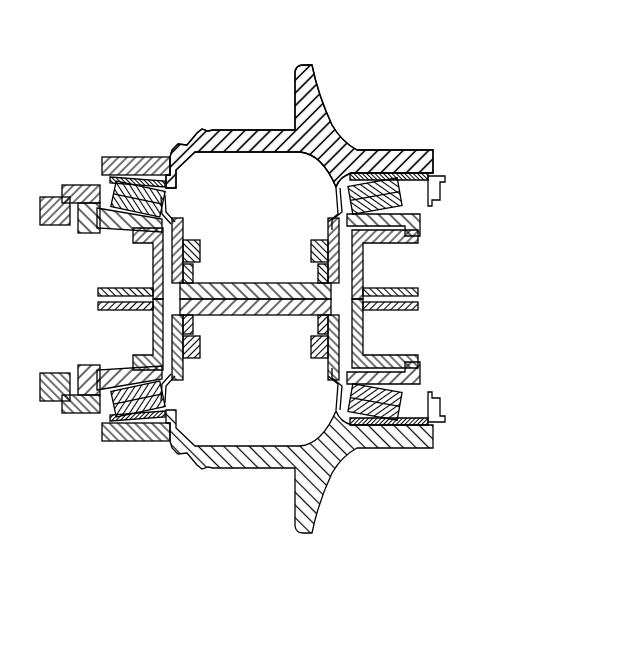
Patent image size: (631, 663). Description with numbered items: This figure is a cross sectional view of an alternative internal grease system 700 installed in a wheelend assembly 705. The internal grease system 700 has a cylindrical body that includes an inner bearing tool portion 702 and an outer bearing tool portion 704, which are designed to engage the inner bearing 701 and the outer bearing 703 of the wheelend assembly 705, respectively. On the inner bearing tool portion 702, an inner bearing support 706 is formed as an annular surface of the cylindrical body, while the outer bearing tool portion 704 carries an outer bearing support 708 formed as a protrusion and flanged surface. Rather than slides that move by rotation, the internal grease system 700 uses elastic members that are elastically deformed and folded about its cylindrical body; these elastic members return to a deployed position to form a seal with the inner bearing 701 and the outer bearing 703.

The internal grease system 700 is at (515, 98).
The inner bearing 701 is at (405, 233).
The inner bearing tool portion 702 is at (413, 132).
The outer bearing 703 is at (112, 369).
The outer bearing tool portion 704 is at (133, 145).
The wheelend assembly 705 is at (248, 128).
The inner bearing support 706 is at (405, 366).
The outer bearing support 708 is at (112, 227).